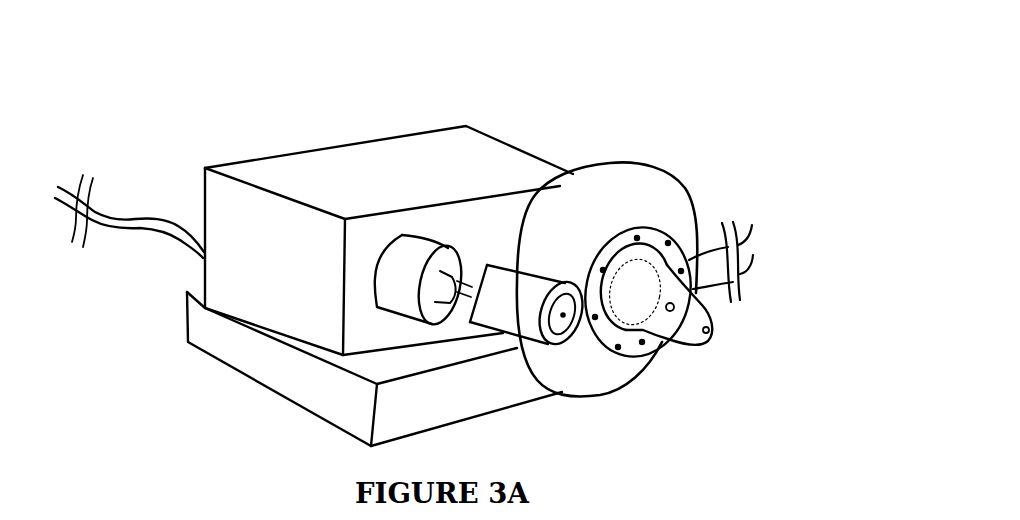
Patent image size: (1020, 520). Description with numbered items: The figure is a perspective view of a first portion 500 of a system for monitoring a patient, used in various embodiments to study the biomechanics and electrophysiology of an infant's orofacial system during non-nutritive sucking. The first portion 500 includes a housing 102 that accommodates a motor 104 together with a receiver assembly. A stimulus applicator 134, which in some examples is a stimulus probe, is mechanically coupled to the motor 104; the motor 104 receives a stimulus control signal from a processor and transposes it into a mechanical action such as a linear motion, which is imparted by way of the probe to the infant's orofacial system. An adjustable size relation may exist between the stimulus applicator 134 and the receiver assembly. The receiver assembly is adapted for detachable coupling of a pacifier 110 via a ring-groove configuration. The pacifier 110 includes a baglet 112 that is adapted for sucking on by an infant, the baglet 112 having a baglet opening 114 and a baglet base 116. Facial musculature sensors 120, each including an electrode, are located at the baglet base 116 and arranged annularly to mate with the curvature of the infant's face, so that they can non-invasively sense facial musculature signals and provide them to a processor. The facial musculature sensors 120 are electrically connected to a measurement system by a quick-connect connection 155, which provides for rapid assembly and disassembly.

The first portion 500 is at (310, 0).
The housing 102 is at (350, 178).
The motor 104 is at (398, 294).
The stimulus applicator 134 is at (521, 318).
The facial musculature sensor 120 is at (668, 243).
The baglet base 116 is at (641, 348).
The baglet 112 is at (712, 307).
The baglet opening 114 is at (708, 331).
The pacifier 110 is at (697, 349).
The quick-connect connection 155 is at (700, 294).